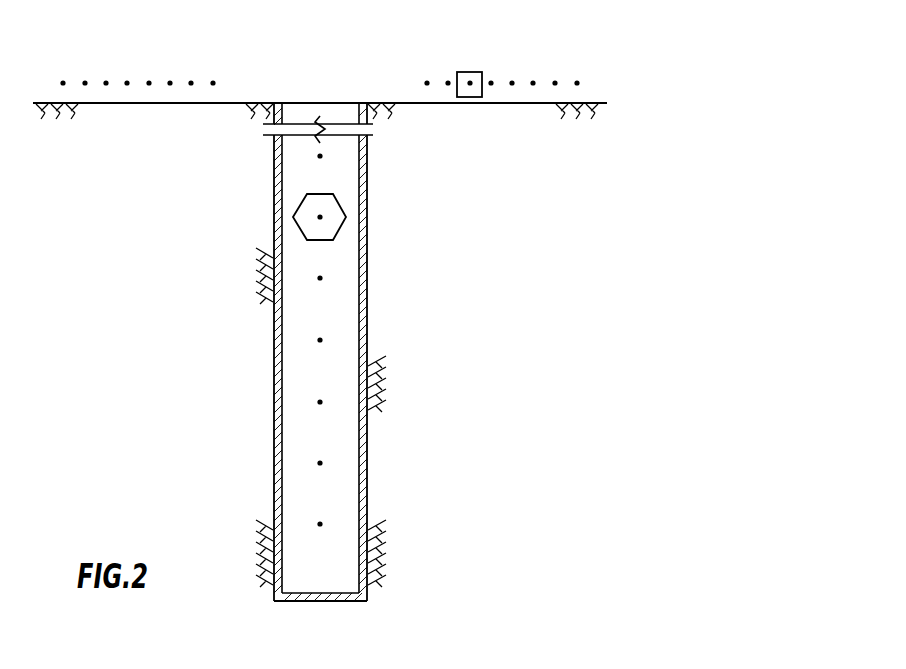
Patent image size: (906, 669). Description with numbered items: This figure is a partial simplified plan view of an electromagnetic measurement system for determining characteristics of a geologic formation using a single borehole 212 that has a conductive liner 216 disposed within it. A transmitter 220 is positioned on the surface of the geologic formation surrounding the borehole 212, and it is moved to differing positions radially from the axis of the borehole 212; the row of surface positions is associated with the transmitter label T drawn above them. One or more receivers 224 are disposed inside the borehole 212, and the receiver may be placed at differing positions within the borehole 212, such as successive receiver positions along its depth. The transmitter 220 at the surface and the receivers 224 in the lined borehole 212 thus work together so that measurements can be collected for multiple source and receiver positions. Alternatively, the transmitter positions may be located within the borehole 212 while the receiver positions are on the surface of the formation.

The transmitter / surface source array T is at (427, 80).
The transmitter 220 is at (470, 97).
The borehole 212 is at (336, 256).
The conductive liner 216 is at (367, 277).
The receivers 224 is at (346, 212).